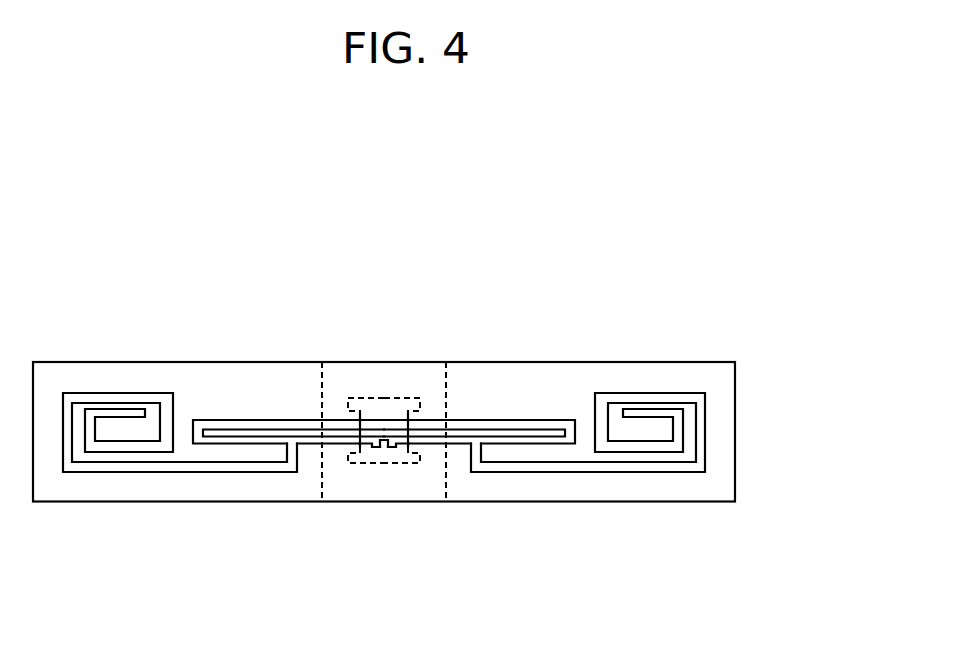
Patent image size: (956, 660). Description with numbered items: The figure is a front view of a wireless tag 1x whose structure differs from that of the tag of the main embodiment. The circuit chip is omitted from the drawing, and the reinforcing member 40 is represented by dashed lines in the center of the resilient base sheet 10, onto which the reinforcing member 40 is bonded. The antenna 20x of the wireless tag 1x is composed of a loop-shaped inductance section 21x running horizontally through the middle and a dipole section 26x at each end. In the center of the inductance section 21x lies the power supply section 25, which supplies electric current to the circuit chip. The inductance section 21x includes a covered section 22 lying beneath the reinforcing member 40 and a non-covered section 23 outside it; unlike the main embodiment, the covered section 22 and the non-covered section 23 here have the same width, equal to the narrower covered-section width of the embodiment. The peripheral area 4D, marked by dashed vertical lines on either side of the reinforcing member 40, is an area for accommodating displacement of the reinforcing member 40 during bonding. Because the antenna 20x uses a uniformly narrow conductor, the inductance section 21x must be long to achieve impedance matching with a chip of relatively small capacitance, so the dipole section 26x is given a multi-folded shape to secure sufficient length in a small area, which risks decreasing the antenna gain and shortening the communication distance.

The wireless tag 1x is at (673, 256).
The resilient base sheet 10 is at (711, 378).
The antenna 20x is at (745, 412).
The inductance section 21x is at (466, 420).
The non-covered section 23 is at (485, 420).
The dipole section 26x is at (700, 450).
The covered section 22 is at (397, 447).
The power supply section 25 is at (379, 447).
The reinforcing member 40 is at (348, 453).
The peripheral area 4D is at (316, 362).